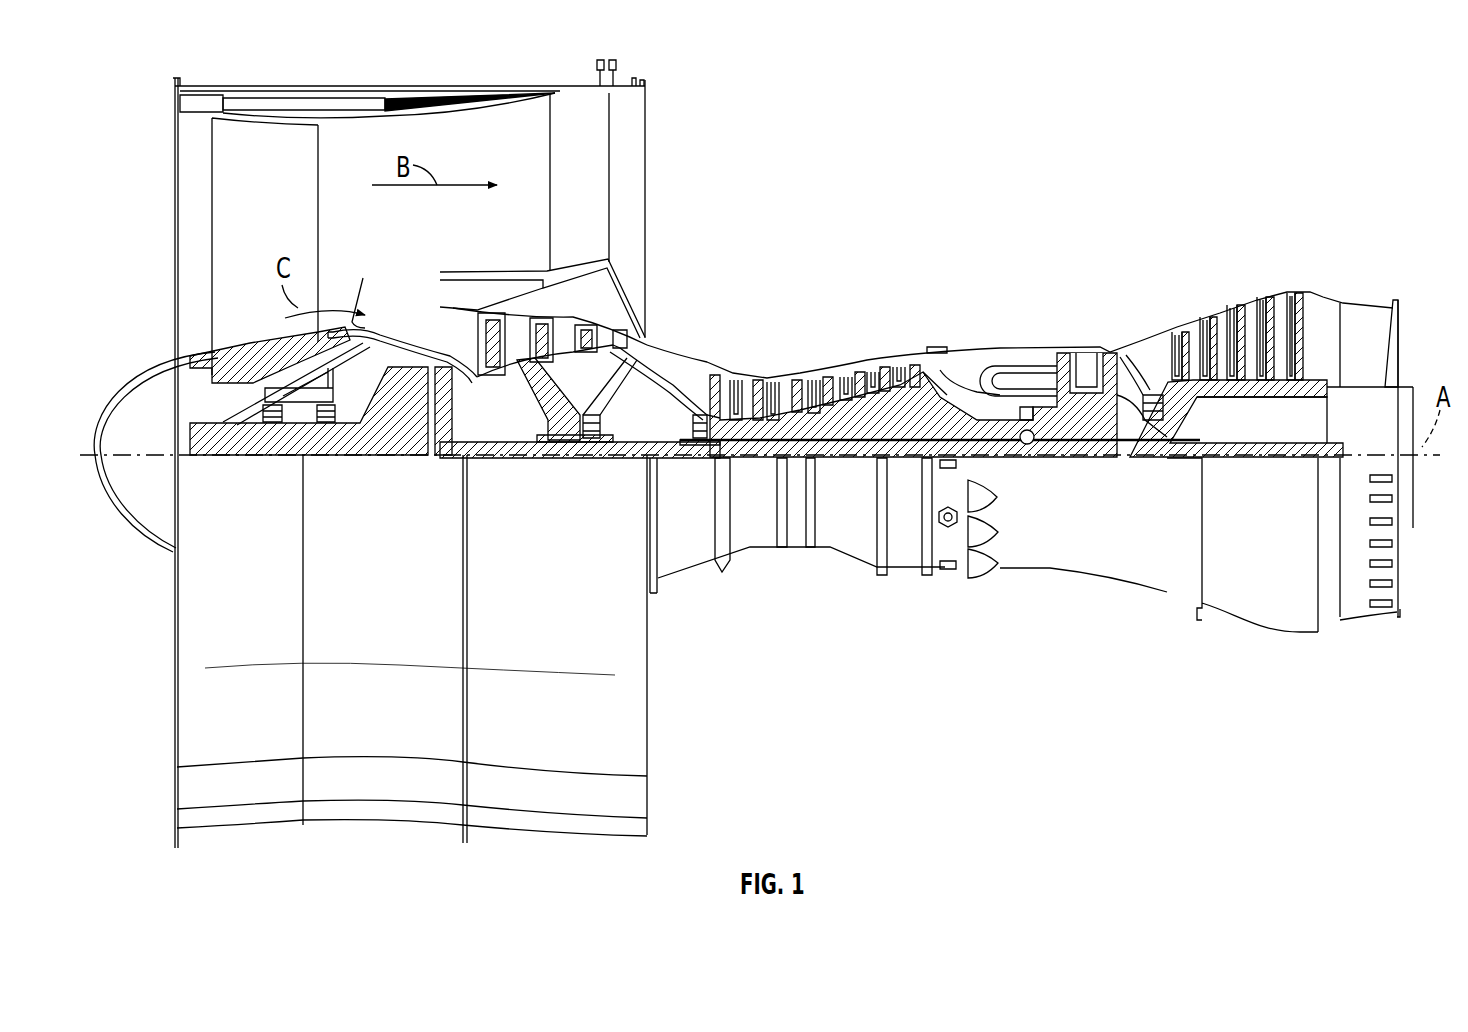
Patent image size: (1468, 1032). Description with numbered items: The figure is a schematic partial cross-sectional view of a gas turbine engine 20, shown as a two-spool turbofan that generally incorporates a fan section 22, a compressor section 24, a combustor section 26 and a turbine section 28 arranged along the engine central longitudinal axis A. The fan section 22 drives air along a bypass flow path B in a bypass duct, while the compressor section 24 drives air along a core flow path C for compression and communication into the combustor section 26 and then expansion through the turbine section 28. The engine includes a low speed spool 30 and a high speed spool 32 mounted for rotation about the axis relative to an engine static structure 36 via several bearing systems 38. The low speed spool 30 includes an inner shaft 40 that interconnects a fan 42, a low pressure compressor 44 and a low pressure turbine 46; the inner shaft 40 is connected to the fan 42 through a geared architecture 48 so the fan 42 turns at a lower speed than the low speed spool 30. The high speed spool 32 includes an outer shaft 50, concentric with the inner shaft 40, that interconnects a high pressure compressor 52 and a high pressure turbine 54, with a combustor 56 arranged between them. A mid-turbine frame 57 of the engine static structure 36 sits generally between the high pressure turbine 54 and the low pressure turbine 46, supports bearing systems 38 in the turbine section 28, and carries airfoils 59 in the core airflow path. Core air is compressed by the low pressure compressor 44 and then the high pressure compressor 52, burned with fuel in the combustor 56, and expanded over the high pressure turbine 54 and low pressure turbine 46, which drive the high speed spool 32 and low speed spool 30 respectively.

The gas turbine engine 20 is at (1222, 122).
The fan section 22 is at (260, 84).
The compressor section 24 is at (940, 349).
The combustor section 26 is at (1010, 343).
The turbine section 28 is at (1271, 421).
The low speed spool 30 is at (866, 457).
The high speed spool 32 is at (918, 408).
The engine static structure 36 is at (907, 578).
The bearing systems 38 is at (272, 437).
The inner shaft 40 is at (662, 450).
The fan 42 is at (288, 209).
The low pressure compressor 44 is at (567, 333).
The low pressure turbine 46 is at (1218, 325).
The geared architecture 48 is at (412, 425).
The outer shaft 50 is at (1032, 442).
The high pressure compressor 52 is at (828, 415).
The high pressure turbine 54 is at (1088, 347).
The combustor 56 is at (1012, 372).
The mid-turbine frame 57 is at (1150, 380).
The airfoils 59 is at (1137, 367).